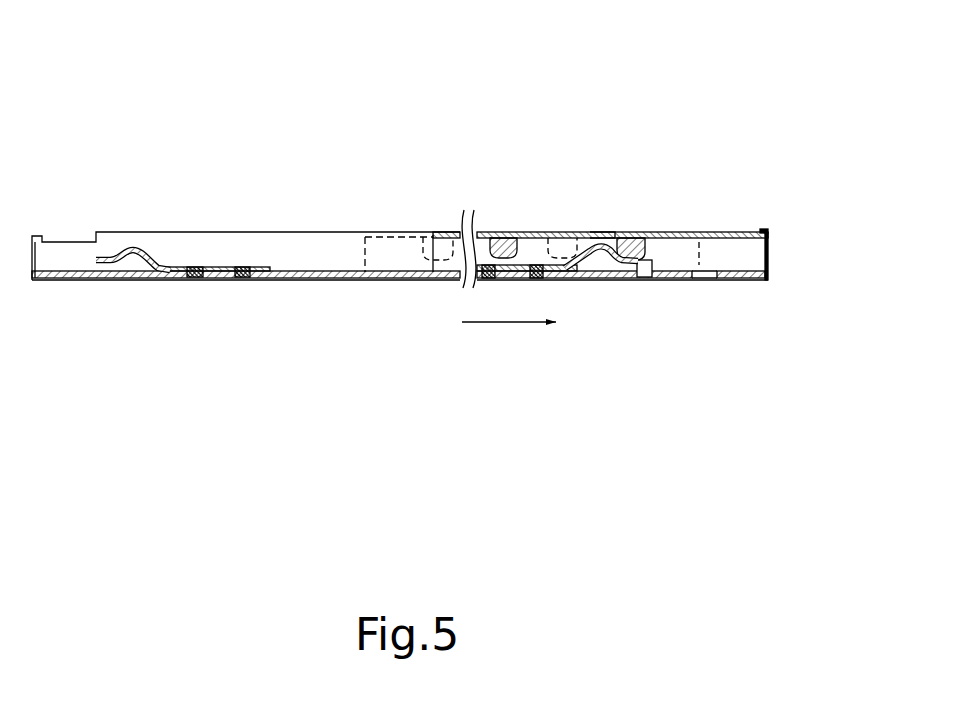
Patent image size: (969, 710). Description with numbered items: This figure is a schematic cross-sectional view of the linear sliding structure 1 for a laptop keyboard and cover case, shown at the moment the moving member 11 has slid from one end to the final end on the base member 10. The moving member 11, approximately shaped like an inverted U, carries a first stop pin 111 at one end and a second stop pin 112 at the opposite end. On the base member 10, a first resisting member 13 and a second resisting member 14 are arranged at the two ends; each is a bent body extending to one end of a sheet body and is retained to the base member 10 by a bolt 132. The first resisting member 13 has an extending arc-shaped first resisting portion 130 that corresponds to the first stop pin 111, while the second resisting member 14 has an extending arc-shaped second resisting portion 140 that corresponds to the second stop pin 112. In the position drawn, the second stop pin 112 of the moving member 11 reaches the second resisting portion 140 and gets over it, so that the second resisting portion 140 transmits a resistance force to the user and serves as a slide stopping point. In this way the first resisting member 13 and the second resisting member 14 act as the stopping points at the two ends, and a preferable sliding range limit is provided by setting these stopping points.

The linear sliding structure 1 is at (588, 92).
The base member 10 is at (752, 282).
The moving member 11 is at (757, 230).
The first stop pin 111 is at (498, 235).
The second stop pin 112 is at (629, 235).
The second resisting portion 140 is at (601, 235).
The first resisting member 13 is at (168, 282).
The first resisting portion 130 is at (134, 246).
The bolt 132 is at (245, 282).
The second resisting member 14 is at (583, 280).